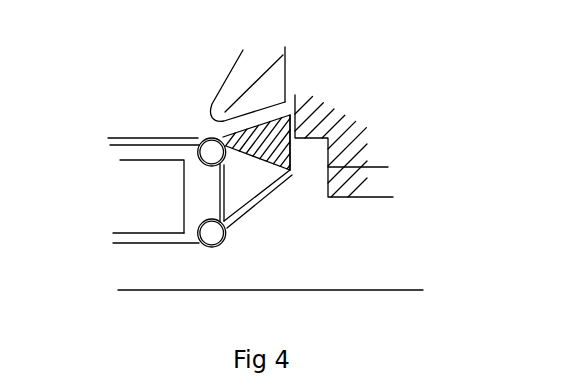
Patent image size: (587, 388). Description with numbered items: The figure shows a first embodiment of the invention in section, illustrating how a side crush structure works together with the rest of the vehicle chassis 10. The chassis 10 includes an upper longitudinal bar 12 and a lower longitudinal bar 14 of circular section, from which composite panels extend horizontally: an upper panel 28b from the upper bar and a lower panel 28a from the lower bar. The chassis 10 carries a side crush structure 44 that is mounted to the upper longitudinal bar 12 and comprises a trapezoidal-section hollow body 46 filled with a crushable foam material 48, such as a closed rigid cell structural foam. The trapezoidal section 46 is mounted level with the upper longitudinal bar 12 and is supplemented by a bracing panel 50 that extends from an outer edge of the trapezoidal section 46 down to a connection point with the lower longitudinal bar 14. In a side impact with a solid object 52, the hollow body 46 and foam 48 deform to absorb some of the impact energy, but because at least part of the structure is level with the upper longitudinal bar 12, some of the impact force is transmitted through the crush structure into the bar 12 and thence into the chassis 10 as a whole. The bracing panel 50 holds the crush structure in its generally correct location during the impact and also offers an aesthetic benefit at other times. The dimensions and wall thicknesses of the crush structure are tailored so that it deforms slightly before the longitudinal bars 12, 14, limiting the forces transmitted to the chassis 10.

The chassis 10 is at (112, 126).
The upper longitudinal bar 12 is at (212, 153).
The lower longitudinal bar 14 is at (212, 236).
The lower panel 28a is at (143, 244).
The upper panel 28b is at (148, 138).
The side crush structure 44 is at (292, 108).
The trapezoidal-section hollow body 46 is at (292, 153).
The crushable foam material 48 is at (266, 155).
The bracing panel 50 is at (252, 205).
The solid object 52 is at (365, 146).